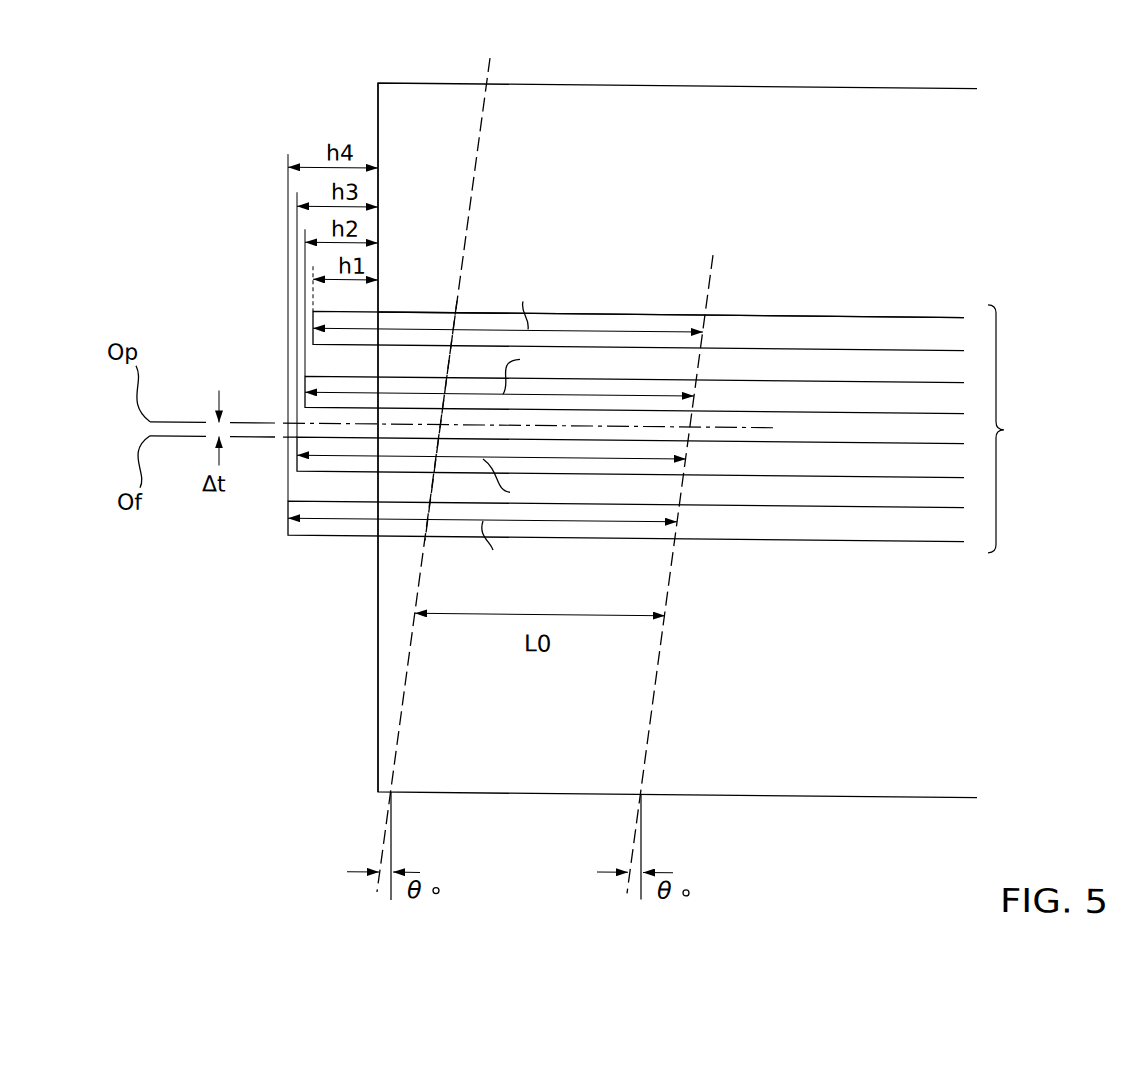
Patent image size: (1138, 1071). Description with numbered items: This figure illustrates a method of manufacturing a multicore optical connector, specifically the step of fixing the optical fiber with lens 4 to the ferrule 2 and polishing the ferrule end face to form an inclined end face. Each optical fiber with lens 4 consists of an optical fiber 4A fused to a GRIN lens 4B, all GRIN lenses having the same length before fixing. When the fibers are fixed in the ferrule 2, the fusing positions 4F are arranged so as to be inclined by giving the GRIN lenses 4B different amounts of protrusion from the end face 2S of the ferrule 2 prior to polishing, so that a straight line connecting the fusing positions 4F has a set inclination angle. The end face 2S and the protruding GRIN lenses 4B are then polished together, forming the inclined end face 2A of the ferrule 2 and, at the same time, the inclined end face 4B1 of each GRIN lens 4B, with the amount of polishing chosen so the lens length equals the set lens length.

The ferrule 2 is at (860, 83).
The inclined end face 2A is at (480, 128).
The end face 2S is at (378, 120).
The optical fiber with lens 4 is at (656, 573).
The optical fiber 4A is at (862, 312).
The GRIN lens 4B is at (626, 312).
The inclined end face of the GRIN lens 4B1 is at (447, 387).
The fusing position 4F is at (695, 388).